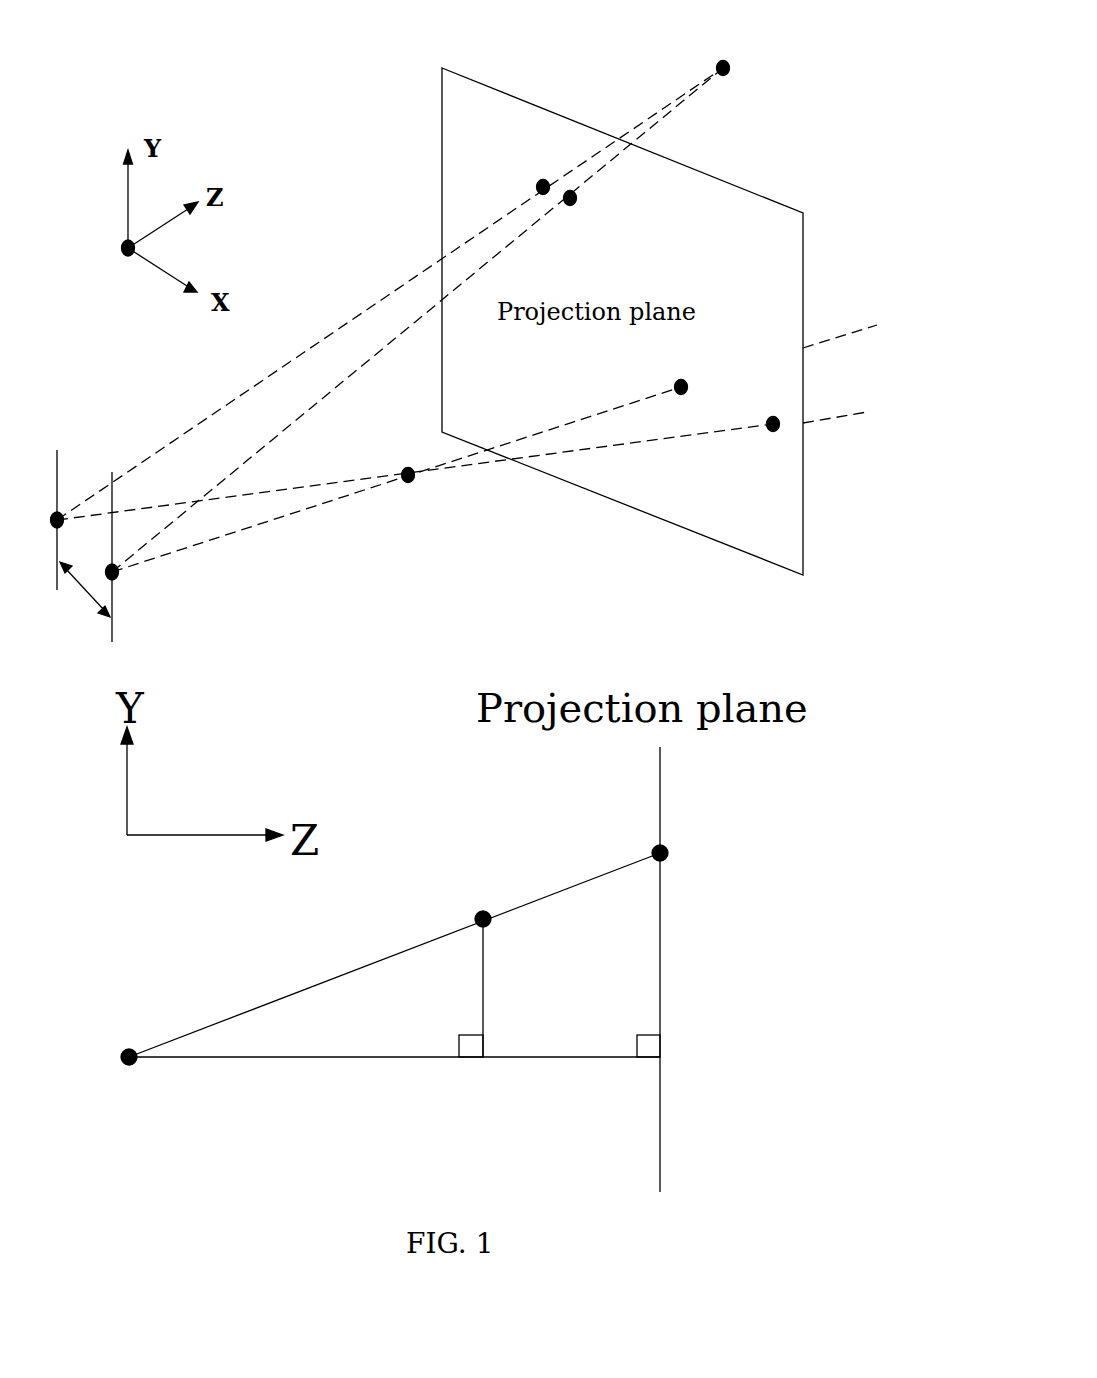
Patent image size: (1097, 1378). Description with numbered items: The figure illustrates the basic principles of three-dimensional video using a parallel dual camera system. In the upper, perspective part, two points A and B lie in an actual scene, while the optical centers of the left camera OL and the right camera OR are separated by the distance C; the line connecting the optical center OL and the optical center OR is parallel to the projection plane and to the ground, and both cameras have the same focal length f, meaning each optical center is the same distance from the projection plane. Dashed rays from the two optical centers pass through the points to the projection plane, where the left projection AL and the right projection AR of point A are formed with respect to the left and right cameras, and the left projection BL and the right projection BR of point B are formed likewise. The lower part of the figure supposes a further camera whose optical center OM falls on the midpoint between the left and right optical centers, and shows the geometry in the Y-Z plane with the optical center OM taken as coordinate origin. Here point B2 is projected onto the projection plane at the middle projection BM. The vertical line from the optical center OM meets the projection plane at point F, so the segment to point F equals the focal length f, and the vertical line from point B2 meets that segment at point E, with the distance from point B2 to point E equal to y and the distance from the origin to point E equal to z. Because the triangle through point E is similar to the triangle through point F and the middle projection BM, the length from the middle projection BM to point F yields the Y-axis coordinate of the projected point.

The point A is at (736, 70).
The projection A'L AL is at (534, 167).
The projection A'R AR is at (587, 219).
The point B is at (411, 497).
The projection B'L BL is at (774, 446).
The projection B'R BR is at (702, 381).
The optical center of the left camera OL is at (41, 521).
The optical center of the right camera OR is at (135, 589).
The distance between optical centers C is at (85, 592).
The optical center of the middle camera OM is at (143, 1028).
The point B in the Y-Z plane view B2 is at (479, 961).
The projection BM is at (696, 838).
The intersection point E is at (484, 1088).
The intersection point F is at (685, 1085).